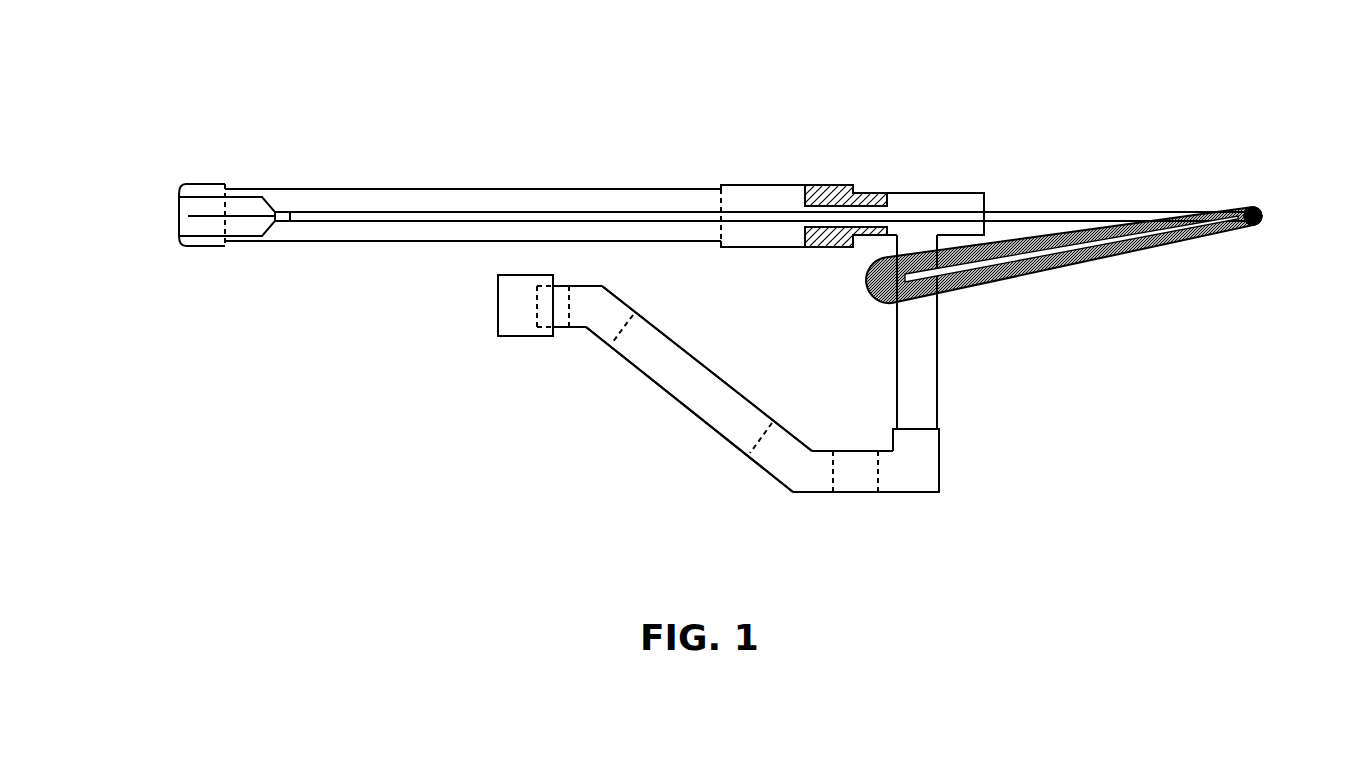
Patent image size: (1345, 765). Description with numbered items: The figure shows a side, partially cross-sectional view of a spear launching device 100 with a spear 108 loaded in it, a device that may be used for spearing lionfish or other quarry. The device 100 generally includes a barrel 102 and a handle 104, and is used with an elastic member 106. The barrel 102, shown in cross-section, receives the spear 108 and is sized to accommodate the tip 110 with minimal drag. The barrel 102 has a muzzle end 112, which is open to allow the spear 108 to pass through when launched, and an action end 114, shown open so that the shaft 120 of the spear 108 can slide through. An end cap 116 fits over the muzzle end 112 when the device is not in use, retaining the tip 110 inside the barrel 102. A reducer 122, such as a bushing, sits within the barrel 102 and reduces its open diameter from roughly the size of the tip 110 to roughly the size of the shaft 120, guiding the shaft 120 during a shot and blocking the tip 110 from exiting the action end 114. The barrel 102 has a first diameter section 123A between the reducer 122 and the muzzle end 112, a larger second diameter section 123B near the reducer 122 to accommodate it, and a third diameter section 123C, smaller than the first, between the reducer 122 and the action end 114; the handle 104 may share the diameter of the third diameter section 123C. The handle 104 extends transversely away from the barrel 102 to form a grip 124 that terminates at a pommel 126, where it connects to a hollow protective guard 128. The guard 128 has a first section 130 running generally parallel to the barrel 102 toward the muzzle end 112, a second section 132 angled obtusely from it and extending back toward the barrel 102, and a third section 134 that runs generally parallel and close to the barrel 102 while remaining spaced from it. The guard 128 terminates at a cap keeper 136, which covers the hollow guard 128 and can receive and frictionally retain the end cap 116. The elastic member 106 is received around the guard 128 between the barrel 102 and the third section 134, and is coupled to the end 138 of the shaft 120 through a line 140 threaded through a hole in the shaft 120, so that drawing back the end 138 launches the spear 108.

The spear launching device 100 is at (402, 50).
The barrel 102 is at (618, 189).
The handle 104 is at (925, 358).
The elastic member 106 is at (1110, 258).
The spear 108 is at (437, 199).
The tip 110 is at (238, 200).
The muzzle end 112 is at (225, 246).
The action end 114 is at (996, 192).
The end cap 116 is at (188, 250).
The shaft 120 is at (1092, 212).
The reducer 122 is at (843, 185).
The first diameter section 123A is at (532, 152).
The second diameter section 123B is at (771, 157).
The third diameter section 123C is at (917, 174).
The grip 124 is at (897, 340).
The pommel 126 is at (920, 468).
The protective guard 128 is at (742, 450).
The first section 130 is at (853, 480).
The second section 132 is at (700, 382).
The third section 134 is at (565, 328).
The cap keeper 136 is at (512, 330).
The end 138 is at (1262, 206).
The line 140 is at (1262, 225).